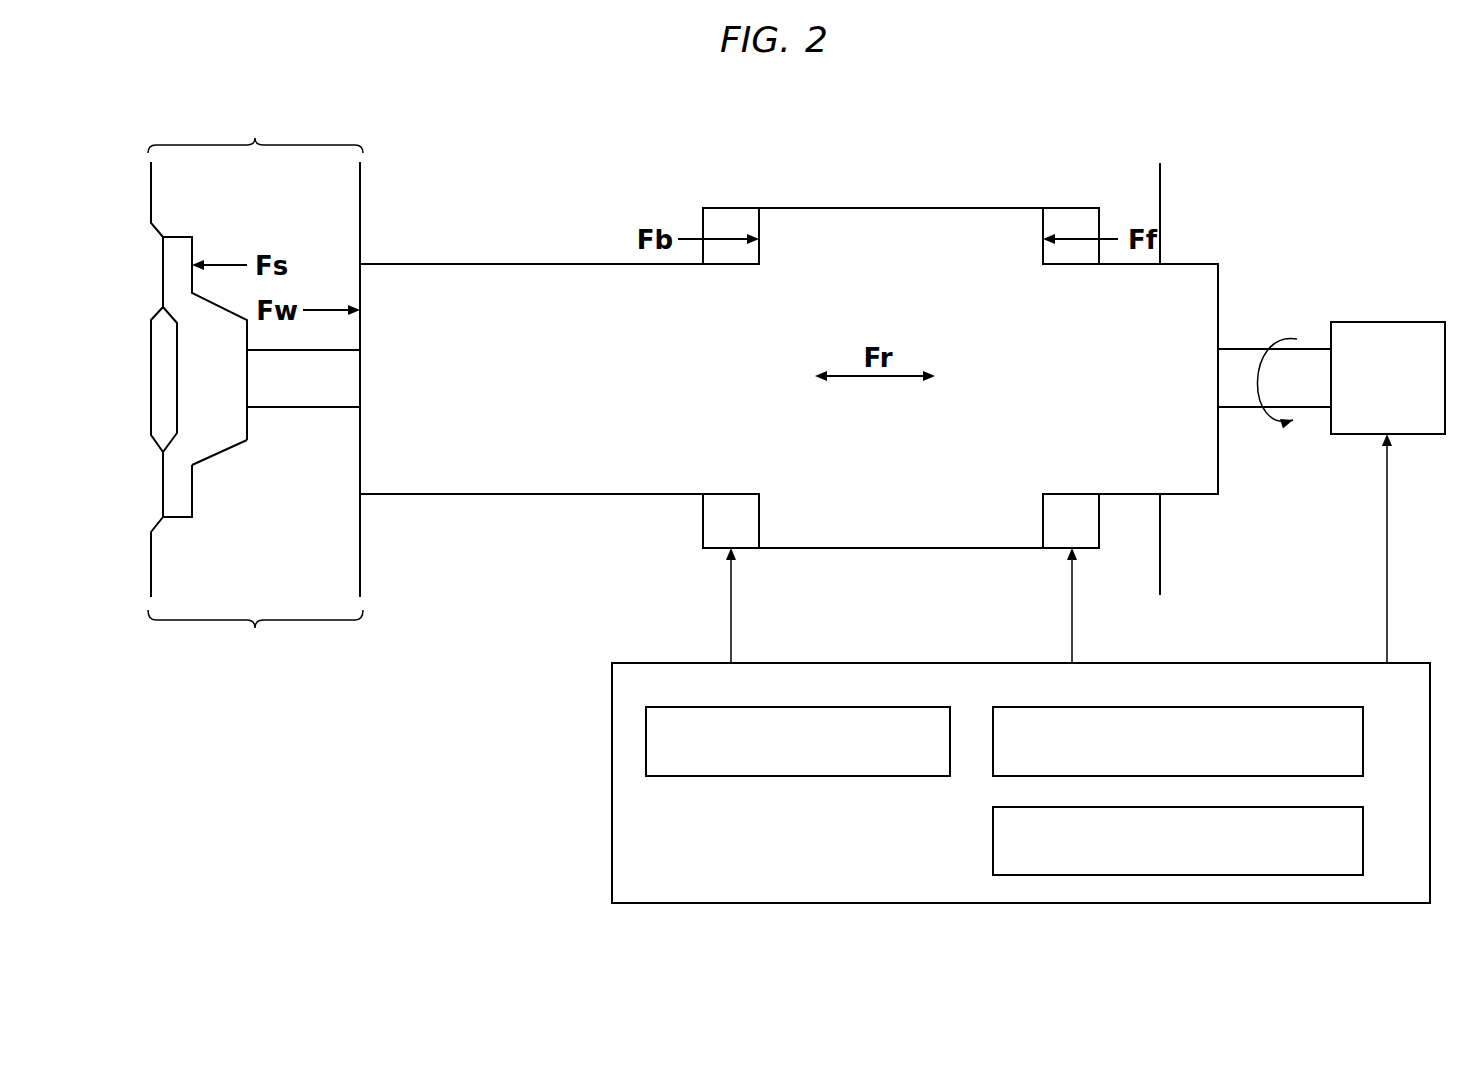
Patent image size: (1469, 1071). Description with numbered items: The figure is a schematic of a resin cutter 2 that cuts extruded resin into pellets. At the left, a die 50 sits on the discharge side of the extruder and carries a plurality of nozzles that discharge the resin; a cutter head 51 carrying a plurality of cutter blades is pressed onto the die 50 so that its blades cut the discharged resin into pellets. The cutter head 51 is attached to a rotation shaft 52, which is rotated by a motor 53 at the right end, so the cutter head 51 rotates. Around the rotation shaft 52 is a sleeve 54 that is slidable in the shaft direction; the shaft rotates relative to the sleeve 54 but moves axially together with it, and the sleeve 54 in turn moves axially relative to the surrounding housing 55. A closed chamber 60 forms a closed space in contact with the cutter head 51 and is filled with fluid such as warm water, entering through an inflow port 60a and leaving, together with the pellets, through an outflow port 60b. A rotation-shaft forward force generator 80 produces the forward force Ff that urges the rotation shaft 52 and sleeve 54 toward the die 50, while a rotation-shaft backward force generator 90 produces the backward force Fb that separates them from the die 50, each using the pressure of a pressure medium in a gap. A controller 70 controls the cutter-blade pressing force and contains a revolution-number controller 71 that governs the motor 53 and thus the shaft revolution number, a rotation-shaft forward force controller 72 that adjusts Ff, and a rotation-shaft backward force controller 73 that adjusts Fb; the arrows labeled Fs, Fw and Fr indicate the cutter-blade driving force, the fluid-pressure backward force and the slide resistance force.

The resin cutter 2 is at (1308, 145).
The die 50 is at (148, 255).
The cutter head 51 is at (213, 440).
The rotation shaft 52 is at (305, 388).
The motor 53 is at (1390, 340).
The sleeve 54 is at (484, 350).
The housing 55 is at (840, 172).
The closed chamber 60 is at (337, 547).
The inflow port 60a is at (255, 638).
The outflow port 60b is at (255, 130).
The controller 70 is at (612, 688).
The revolution-number controller 71 is at (951, 721).
The rotation-shaft forward force controller 72 is at (1366, 721).
The rotation-shaft backward force controller 73 is at (1366, 821).
The rotation-shaft forward force generator 80 is at (1080, 222).
The rotation-shaft backward force generator 90 is at (720, 222).